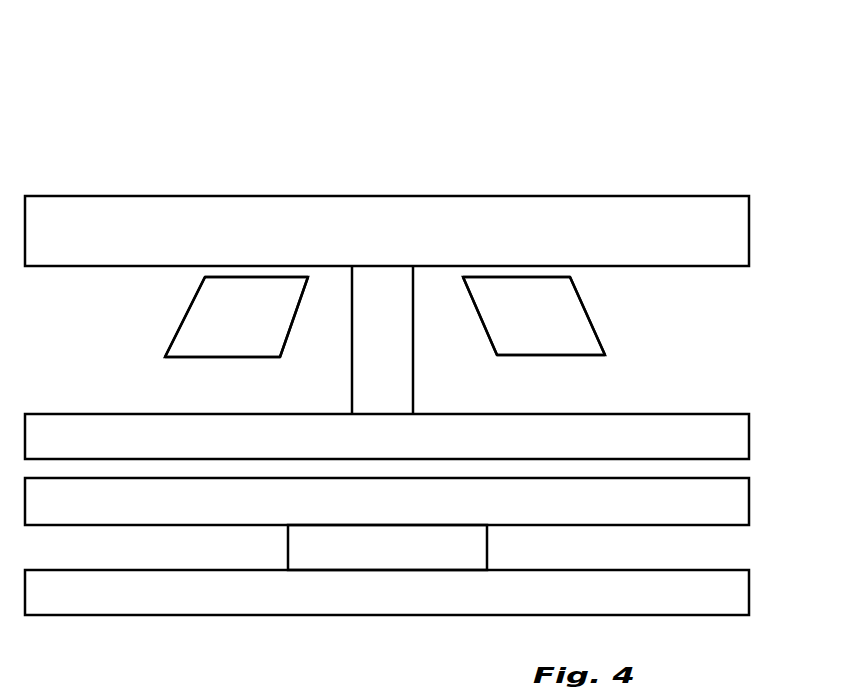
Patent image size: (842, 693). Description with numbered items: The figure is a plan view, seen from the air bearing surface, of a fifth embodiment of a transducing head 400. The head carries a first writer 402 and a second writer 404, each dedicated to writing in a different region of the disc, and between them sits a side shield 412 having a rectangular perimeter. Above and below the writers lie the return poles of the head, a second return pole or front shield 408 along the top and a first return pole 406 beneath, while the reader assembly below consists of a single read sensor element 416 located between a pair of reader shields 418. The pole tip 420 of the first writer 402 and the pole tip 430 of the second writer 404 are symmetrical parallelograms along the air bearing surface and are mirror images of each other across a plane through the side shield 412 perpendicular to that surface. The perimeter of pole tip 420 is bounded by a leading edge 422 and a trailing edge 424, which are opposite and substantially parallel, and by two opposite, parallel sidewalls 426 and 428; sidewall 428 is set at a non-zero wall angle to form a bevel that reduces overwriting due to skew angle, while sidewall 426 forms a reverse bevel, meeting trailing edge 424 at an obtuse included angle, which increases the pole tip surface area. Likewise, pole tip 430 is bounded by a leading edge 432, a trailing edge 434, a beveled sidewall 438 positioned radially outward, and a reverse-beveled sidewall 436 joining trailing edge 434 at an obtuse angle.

The transducing head 400 is at (434, 124).
The first writer 402 is at (488, 176).
The second writer 404 is at (258, 182).
The first return pole 406 is at (733, 425).
The second return pole 408 is at (718, 230).
The side shield 412 is at (394, 337).
The read sensor element 416 is at (342, 536).
The reader shields 418 is at (740, 515).
The pole tip 420 is at (555, 299).
The leading edge 422 is at (523, 356).
The trailing edge 424 is at (574, 274).
The sidewall 426 is at (591, 325).
The sidewall 428 is at (488, 337).
The pole tip 430 is at (232, 299).
The leading edge 432 is at (233, 359).
The trailing edge 434 is at (216, 275).
The sidewall 436 is at (172, 340).
The sidewall 438 is at (290, 327).